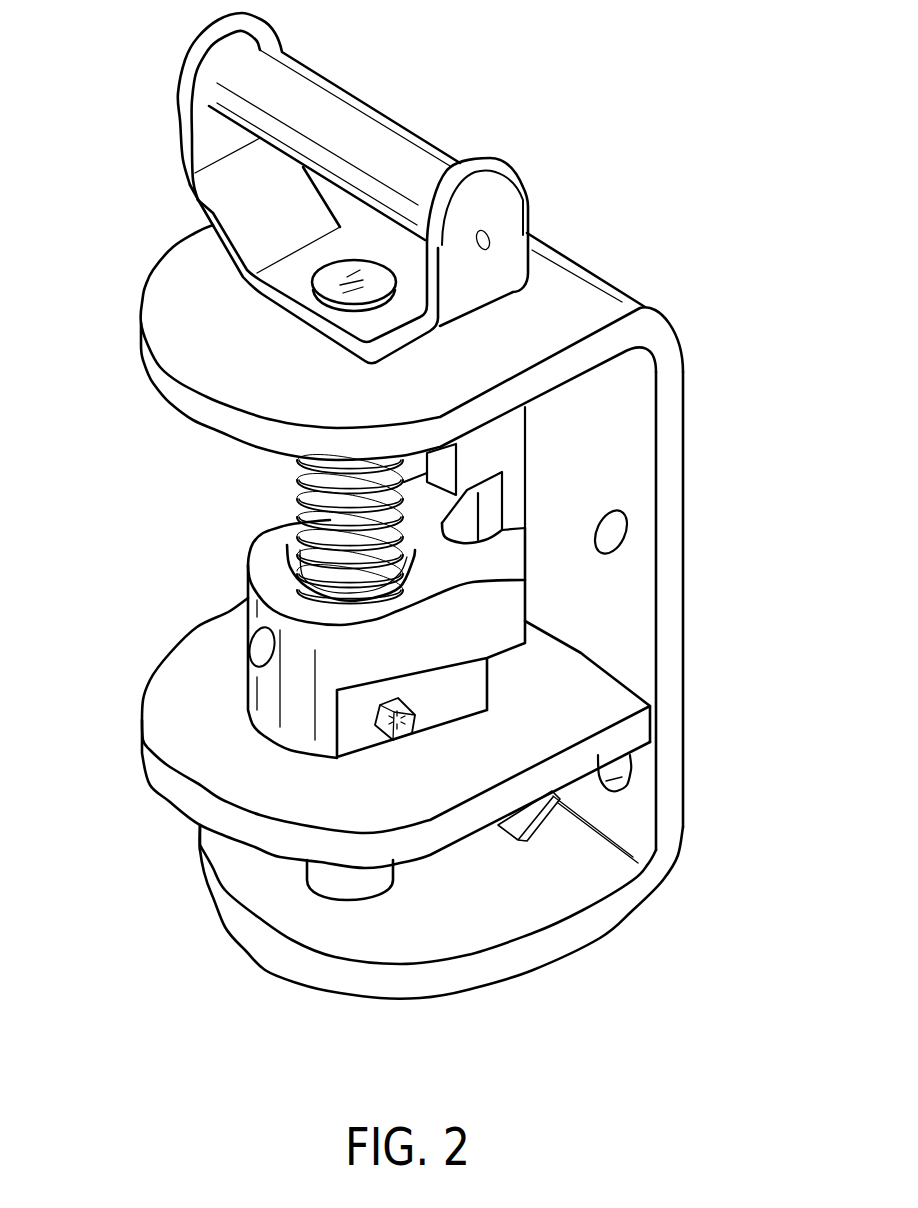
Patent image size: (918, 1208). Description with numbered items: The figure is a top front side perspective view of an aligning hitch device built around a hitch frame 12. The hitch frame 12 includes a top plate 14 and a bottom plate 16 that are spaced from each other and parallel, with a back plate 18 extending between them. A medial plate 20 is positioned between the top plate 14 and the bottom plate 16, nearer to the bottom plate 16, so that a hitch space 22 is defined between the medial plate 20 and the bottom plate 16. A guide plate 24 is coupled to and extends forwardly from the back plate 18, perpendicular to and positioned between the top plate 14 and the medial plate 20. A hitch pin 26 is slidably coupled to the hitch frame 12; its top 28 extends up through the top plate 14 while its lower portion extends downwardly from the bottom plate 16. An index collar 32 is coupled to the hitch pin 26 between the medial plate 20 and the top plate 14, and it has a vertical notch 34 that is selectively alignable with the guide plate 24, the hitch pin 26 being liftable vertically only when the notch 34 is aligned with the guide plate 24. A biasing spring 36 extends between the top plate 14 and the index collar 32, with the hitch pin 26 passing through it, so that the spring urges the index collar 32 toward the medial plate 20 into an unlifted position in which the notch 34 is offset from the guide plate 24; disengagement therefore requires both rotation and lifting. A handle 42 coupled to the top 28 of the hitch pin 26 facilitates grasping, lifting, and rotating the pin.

The hitch frame 12 is at (740, 631).
The top plate 14 is at (182, 337).
The bottom plate 16 is at (528, 910).
The back plate 18 is at (637, 500).
The medial plate 20 is at (173, 708).
The hitch space 22 is at (222, 860).
The guide plate 24 is at (493, 443).
The hitch pin 26 is at (332, 479).
The top of the hitch pin 28 is at (340, 288).
The index collar 32 is at (250, 556).
The vertical notch 34 is at (497, 517).
The biasing spring 36 is at (305, 520).
The handle 42 is at (377, 140).